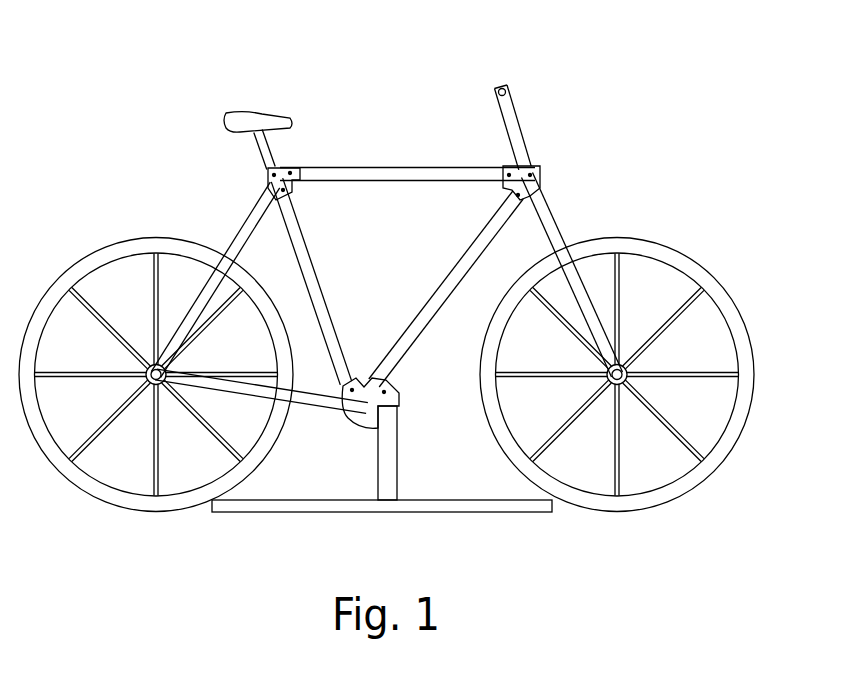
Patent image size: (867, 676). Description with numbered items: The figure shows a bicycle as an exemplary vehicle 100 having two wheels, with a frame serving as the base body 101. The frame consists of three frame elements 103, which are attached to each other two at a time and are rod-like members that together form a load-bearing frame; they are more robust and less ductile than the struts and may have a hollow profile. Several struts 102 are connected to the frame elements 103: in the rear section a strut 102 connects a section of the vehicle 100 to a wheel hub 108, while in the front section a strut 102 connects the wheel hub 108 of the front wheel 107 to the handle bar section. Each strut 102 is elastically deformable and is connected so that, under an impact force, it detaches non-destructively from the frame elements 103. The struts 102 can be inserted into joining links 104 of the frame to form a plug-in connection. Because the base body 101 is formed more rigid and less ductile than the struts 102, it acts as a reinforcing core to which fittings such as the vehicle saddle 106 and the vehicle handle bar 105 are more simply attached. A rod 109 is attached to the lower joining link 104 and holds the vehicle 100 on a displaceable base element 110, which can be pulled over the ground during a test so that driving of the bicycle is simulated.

The vehicle 100 is at (418, 295).
The base body 101 is at (393, 264).
The strut 102 is at (238, 222).
The frame element 103 is at (455, 268).
The joining link 104 is at (290, 160).
The vehicle handle bar 105 is at (509, 90).
The vehicle saddle 106 is at (241, 100).
The front wheel 107 is at (98, 243).
The wheel hub 108 is at (152, 385).
The rod 109 is at (388, 462).
The displaceable base element 110 is at (470, 512).